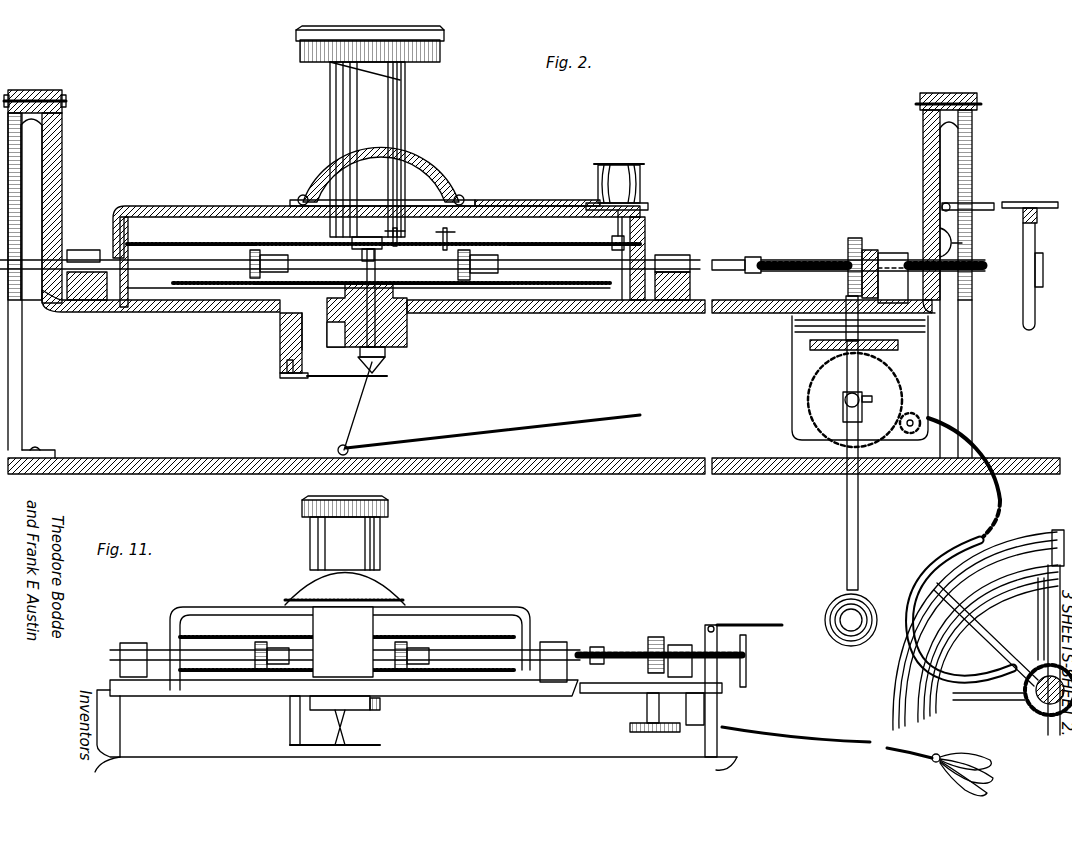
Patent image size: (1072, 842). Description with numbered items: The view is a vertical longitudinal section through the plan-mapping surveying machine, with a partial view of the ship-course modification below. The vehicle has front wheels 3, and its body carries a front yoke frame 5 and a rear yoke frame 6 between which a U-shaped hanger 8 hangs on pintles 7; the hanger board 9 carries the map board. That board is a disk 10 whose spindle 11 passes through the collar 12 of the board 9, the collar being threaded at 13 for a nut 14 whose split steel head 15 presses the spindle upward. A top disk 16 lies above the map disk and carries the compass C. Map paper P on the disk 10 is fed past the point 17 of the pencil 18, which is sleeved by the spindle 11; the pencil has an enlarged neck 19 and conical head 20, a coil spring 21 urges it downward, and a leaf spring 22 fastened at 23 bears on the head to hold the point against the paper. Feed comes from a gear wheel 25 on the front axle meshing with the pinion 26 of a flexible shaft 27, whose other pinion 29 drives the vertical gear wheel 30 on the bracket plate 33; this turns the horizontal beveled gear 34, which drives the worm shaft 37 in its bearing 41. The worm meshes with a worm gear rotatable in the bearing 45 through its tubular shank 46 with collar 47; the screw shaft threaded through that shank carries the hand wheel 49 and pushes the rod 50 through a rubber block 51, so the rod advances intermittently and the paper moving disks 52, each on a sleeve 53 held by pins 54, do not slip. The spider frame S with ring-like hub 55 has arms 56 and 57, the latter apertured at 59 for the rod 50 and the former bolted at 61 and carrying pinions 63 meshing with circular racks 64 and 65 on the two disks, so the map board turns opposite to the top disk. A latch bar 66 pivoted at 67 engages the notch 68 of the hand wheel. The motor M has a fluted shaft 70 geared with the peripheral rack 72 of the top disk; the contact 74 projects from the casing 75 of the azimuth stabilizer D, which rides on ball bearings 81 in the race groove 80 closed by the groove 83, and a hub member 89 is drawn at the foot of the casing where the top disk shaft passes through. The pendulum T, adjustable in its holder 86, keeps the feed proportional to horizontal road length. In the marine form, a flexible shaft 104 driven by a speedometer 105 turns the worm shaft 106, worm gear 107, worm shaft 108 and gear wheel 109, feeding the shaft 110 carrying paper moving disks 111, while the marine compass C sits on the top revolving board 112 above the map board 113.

In FIG. 2, the front wheels 3 is at (1022, 540).
In FIG. 2, the front yoke frame 5 is at (972, 140).
In FIG. 2, the rear yoke frame 6 is at (30, 160).
In FIG. 2, the pintles 7 is at (60, 98).
In FIG. 2, the U-shaped hanger 8 is at (62, 181).
In FIG. 2, the hanger board 9 is at (160, 313).
In FIG. 2, the map board disk 10 is at (525, 290).
In FIG. 2, the spindle 11 is at (395, 345).
In FIG. 2, the collar 12 is at (418, 332).
In FIG. 2, the external thread 13 is at (352, 400).
In FIG. 2, the nut 14 is at (416, 336).
In FIG. 2, the split steel head 15 is at (334, 342).
In FIG. 2, the top disk 16 is at (172, 243).
In FIG. 2, the pencil point 17 is at (280, 322).
In FIG. 2, the pencil 18 is at (284, 348).
In FIG. 2, the enlarged neck 19 is at (385, 378).
In FIG. 2, the conical head 20 is at (366, 372).
In FIG. 2, the coil spring 21 is at (388, 355).
In FIG. 2, the leaf spring 22 is at (340, 368).
In FIG. 2, the fastening point 23 is at (318, 332).
In FIG. 2, the gear wheel 25 is at (1045, 718).
In FIG. 2, the pinion 26 is at (1035, 660).
In FIG. 2, the flexible shaft 27 is at (925, 548).
In FIG. 2, the pinion 29 is at (292, 362).
In FIG. 2, the vertical gear wheel 30 is at (900, 373).
In FIG. 2, the bracket plate 33 is at (795, 342).
In FIG. 2, the horizontal beveled gear 34 is at (818, 352).
In FIG. 2, the worm shaft 37 is at (852, 238).
In FIG. 2, the bearing 41 is at (846, 302).
In FIG. 2, the bearing 45 is at (894, 254).
In FIG. 2, the tubular shank 46 is at (808, 260).
In FIG. 2, the collar 47 is at (908, 252).
In FIG. 2, the hand wheel 49 is at (1023, 230).
In FIG. 2, the rod 50 is at (725, 262).
In FIG. 2, the rubber block 51 is at (760, 257).
In FIG. 2, the paper moving disks 52 is at (450, 262).
In FIG. 2, the sleeve 53 is at (495, 262).
In FIG. 2, the pins 54 is at (255, 250).
In FIG. 2, the ring-like hub 55 is at (296, 203).
In FIG. 2, the spider arms 56 is at (102, 300).
In FIG. 2, the spider arms 57 is at (155, 206).
In FIG. 2, the apertures 59 is at (112, 258).
In FIG. 2, the bolted connection 61 is at (288, 256).
In FIG. 2, the gear pinions 63 is at (466, 252).
In FIG. 2, the circular rack 64 is at (132, 300).
In FIG. 2, the circular rack 65 is at (133, 225).
In FIG. 2, the latch bar 66 is at (1010, 202).
In FIG. 2, the pivot 67 is at (950, 206).
In FIG. 2, the notch 68 is at (1023, 212).
In FIG. 2, the motor shaft 70 is at (612, 240).
In FIG. 2, the peripheral rack 72 is at (556, 250).
In FIG. 2, the contact 74 is at (418, 178).
In FIG. 2, the casing 75 is at (331, 112).
In FIG. 2, the ball race 80 is at (462, 206).
In FIG. 2, the ball bearings 81 is at (300, 196).
In FIG. 2, the groove 83 is at (482, 204).
In FIG. 2, the holder 86 is at (843, 412).
In FIG. 2, the hub 89 is at (366, 237).
In FIG. 11, the flexible shaft 104 is at (828, 728).
In FIG. 11, the speedometer 105 is at (966, 768).
In FIG. 11, the worm shaft 106 is at (650, 735).
In FIG. 11, the worm gear 107 is at (645, 728).
In FIG. 11, the worm shaft 108 is at (672, 645).
In FIG. 11, the gear wheel 109 is at (650, 637).
In FIG. 11, the shaft 110 is at (598, 647).
In FIG. 11, the paper moving disks 111 is at (262, 650).
In FIG. 11, the top revolving board 112 is at (398, 645).
In FIG. 11, the map board 113 is at (236, 672).
In FIG. 2, the compass C is at (446, 52).
In FIG. 11, the compass C is at (390, 510).
In FIG. 2, the azimuth stabilizer D is at (408, 100).
In FIG. 11, the azimuth stabilizer D is at (382, 542).
In FIG. 2, the motor M is at (622, 160).
In FIG. 2, the map paper P is at (495, 300).
In FIG. 2, the spider frame S is at (212, 205).
In FIG. 2, the pendulum T is at (848, 596).